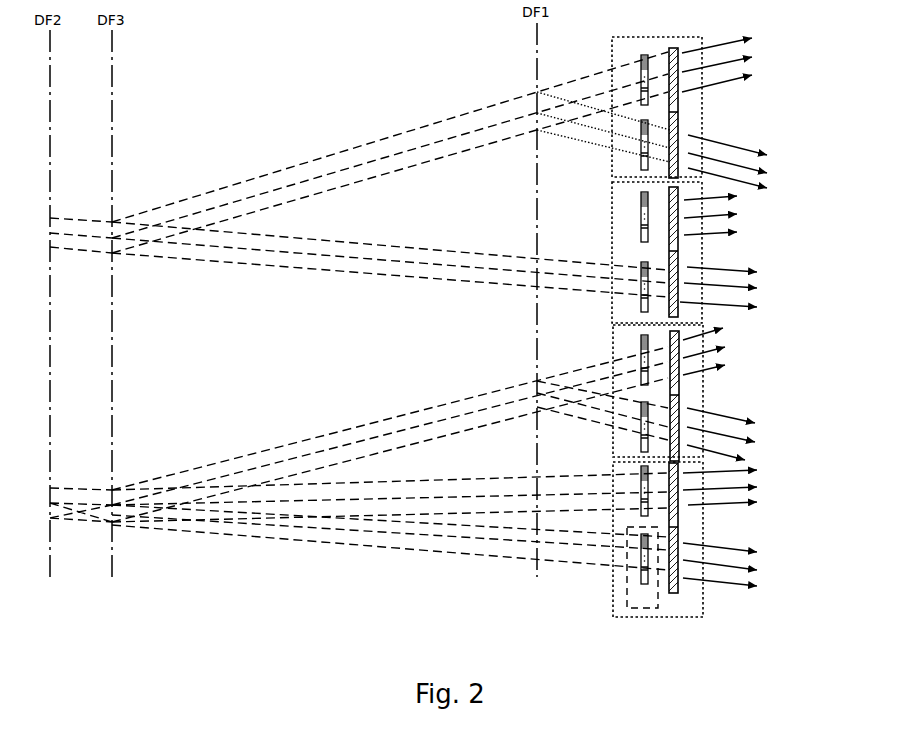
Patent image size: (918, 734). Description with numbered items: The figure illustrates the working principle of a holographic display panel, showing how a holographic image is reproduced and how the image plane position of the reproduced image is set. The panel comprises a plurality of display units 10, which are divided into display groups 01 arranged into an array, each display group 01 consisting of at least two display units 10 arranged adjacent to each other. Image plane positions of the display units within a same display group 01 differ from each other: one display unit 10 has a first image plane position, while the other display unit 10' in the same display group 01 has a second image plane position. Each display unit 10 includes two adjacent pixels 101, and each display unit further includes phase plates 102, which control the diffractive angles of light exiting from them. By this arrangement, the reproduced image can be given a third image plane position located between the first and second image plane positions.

The display unit 10 is at (715, 249).
The display unit 10' is at (681, 416).
The display group 01 is at (701, 343).
The pixel 101 is at (627, 598).
The phase plate 102 is at (678, 592).